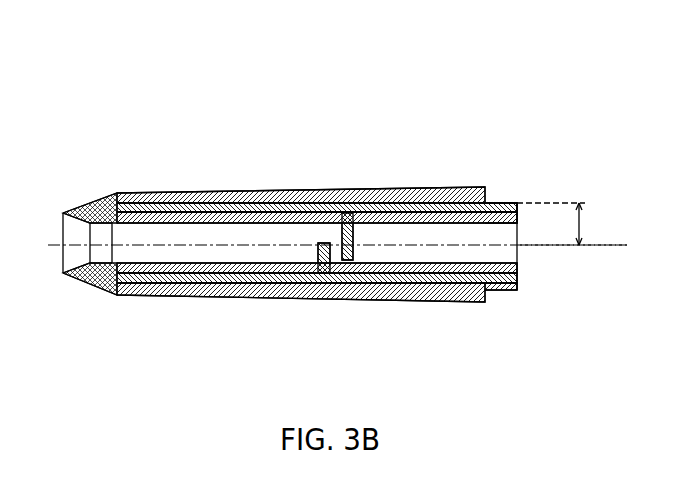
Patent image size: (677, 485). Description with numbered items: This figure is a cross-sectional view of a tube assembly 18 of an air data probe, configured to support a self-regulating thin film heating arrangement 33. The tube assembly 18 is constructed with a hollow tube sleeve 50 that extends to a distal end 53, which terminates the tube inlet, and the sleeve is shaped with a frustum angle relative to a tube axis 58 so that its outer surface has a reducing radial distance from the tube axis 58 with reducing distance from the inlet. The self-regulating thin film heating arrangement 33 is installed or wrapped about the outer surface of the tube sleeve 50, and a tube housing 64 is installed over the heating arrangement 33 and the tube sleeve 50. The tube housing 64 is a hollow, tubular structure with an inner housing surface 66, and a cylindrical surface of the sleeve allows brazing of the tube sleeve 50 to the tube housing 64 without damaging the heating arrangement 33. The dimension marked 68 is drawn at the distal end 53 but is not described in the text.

The tube assembly 18 is at (438, 158).
The self-regulating thin film heating arrangement 33 is at (288, 297).
The tube sleeve 50 is at (397, 300).
The distal end 53 is at (490, 228).
The tube axis 58 is at (547, 245).
The tube housing 64 is at (360, 193).
The inner housing surface 66 is at (262, 193).
The offset distance 68 is at (580, 222).